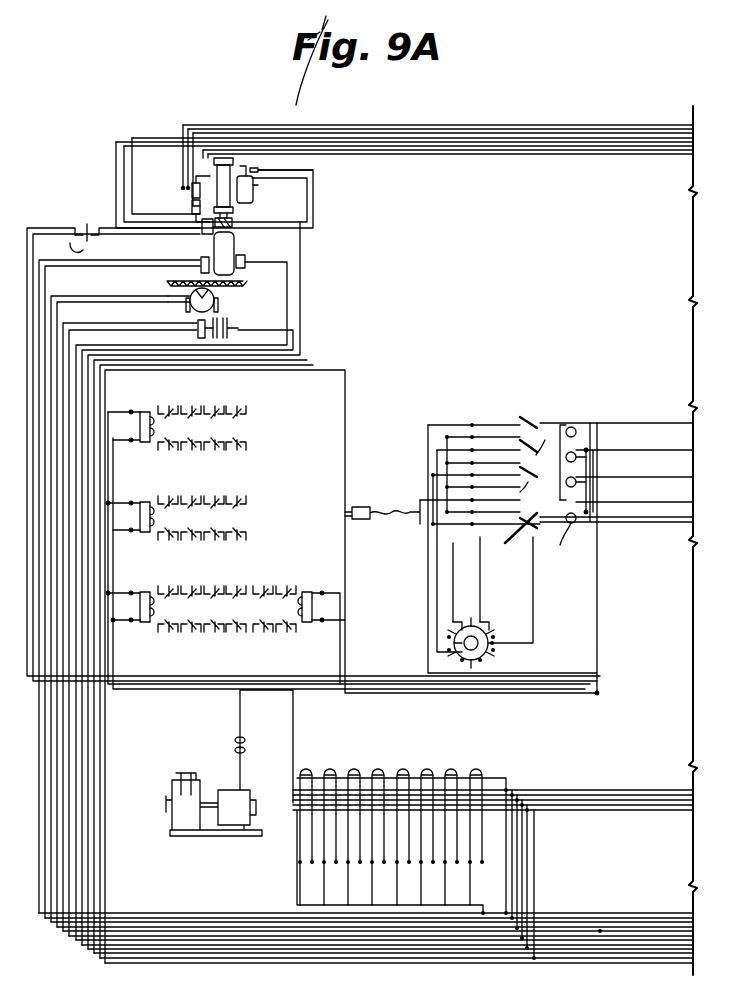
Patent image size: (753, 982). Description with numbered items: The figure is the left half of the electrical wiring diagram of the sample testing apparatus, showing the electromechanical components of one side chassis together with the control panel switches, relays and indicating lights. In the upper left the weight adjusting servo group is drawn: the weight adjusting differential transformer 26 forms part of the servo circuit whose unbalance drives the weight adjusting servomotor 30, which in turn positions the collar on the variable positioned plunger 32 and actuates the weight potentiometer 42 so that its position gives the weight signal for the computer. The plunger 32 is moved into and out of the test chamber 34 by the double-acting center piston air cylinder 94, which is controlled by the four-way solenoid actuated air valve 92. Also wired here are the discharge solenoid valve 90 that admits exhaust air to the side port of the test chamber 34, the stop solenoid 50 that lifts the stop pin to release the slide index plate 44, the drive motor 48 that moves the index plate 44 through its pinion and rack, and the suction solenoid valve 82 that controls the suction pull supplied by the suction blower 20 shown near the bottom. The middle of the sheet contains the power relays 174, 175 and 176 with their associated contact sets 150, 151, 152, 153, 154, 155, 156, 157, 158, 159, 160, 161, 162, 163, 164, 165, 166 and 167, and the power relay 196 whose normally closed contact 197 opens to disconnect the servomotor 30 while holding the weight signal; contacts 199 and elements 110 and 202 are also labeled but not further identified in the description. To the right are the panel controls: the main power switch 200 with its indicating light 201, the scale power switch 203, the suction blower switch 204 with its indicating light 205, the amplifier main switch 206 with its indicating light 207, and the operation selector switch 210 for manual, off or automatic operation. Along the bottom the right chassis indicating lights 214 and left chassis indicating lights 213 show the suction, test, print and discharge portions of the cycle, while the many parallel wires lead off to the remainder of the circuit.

The double-acting center piston air cylinder 94 is at (223, 158).
The weight potentiometer 42 is at (192, 186).
The weight adjusting differential transformer 26 is at (192, 207).
The four-way solenoid actuated air valve 92 is at (254, 191).
The variable positioned plunger 32 is at (232, 222).
The test chamber 34 is at (234, 243).
The stop solenoid 50 is at (245, 258).
The weight adjusting servomotor 30 is at (202, 230).
The switch contacts 199 is at (225, 652).
The discharge solenoid valve 90 is at (201, 268).
The slide index plate 44 is at (243, 284).
The drive motor 48 is at (214, 302).
The switch 110 is at (198, 329).
The suction solenoid valve 82 is at (238, 330).
The contact 150 is at (160, 404).
The contact 151 is at (190, 404).
The contact 152 is at (213, 404).
The contact 153 is at (238, 404).
The contact 154 is at (160, 452).
The contact 155 is at (191, 452).
The contact 156 is at (213, 452).
The contact 157 is at (246, 446).
The contact 158 is at (160, 494).
The contact 159 is at (190, 494).
The contact 160 is at (213, 494).
The contact 161 is at (238, 494).
The contact 162 is at (160, 542).
The contact 163 is at (191, 542).
The contact 164 is at (213, 542).
The contact 165 is at (246, 541).
The contact 166 is at (160, 584).
The contact 167 is at (192, 584).
The power relay 174 is at (152, 430).
The power relay 175 is at (152, 518).
The power relay 176 is at (152, 607).
The power relay 196 is at (300, 607).
The normally closed contact 197 is at (262, 584).
The main power switch 200 is at (525, 535).
The indicating light 201 is at (570, 535).
The switch 202 is at (528, 482).
The scale power switch 203 is at (586, 482).
The suction blower switch 204 is at (545, 440).
The indicating light 205 is at (586, 457).
The amplifier main switch 206 is at (540, 420).
The indicating light 207 is at (571, 427).
The operation selector switch 210 is at (490, 648).
The left chassis indicating lights 213 is at (476, 765).
The right chassis indicating lights 214 is at (378, 765).
The suction blower 20 is at (215, 838).